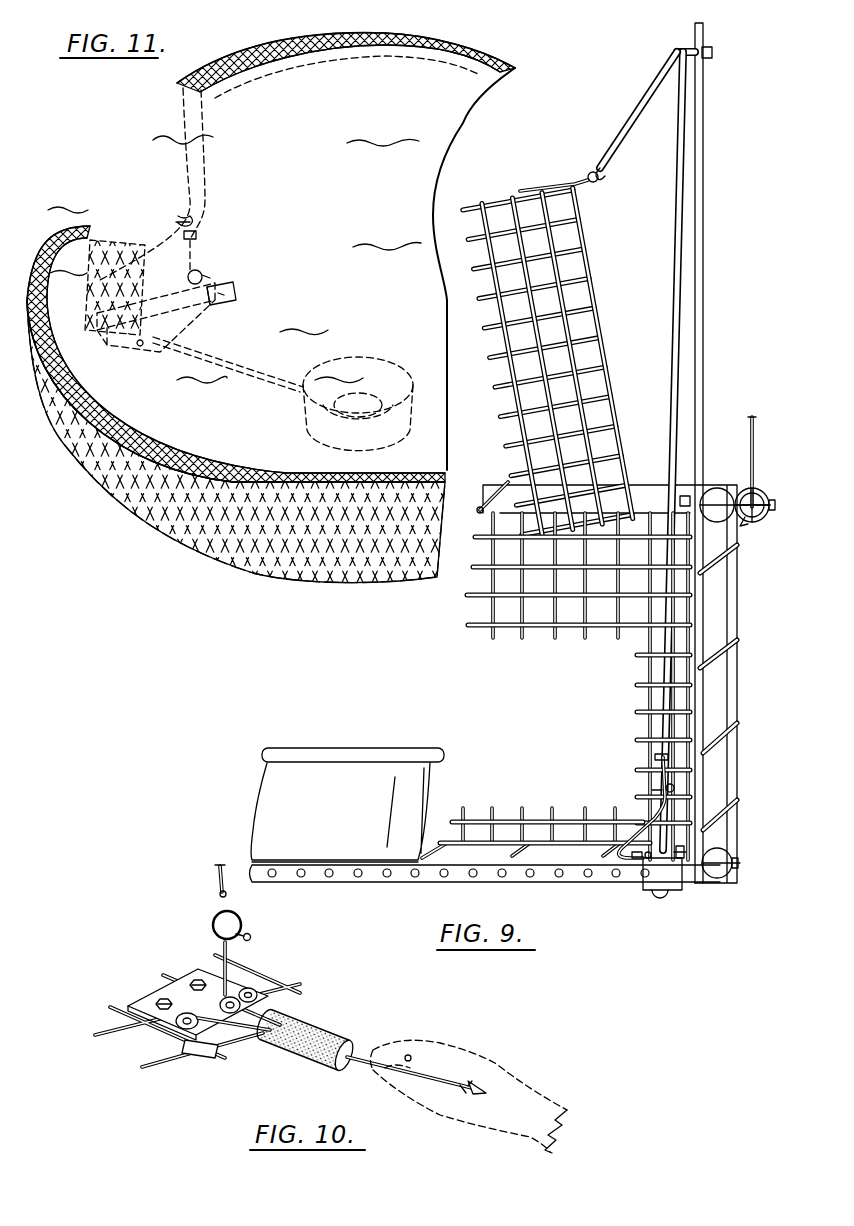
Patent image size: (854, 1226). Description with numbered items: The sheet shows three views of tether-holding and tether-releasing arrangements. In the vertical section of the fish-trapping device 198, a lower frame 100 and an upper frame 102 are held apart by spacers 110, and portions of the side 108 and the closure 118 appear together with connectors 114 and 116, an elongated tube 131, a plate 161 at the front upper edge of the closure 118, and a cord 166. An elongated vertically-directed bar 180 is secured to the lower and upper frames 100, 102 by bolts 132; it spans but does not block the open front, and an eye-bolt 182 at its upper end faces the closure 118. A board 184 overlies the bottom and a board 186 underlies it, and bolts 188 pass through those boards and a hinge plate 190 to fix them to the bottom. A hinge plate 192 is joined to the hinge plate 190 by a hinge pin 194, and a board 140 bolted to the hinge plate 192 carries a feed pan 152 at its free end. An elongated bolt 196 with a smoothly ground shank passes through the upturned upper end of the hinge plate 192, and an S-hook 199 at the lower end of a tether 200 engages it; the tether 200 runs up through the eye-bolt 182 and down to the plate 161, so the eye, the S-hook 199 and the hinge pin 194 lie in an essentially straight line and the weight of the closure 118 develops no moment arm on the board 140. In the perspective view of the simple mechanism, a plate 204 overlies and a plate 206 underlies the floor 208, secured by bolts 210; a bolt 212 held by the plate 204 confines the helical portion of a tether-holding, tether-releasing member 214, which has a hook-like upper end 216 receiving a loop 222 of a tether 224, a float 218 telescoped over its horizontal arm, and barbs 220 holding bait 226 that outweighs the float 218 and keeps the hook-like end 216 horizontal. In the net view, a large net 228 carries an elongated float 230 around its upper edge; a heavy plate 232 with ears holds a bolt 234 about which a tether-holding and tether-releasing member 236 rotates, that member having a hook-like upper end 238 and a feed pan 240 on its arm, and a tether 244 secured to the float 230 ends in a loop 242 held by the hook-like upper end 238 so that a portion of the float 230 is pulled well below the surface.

In FIG. 9, the lower frame 100 is at (498, 483).
In FIG. 9, the upper frame 102 is at (720, 488).
In FIG. 9, the side 108 is at (480, 630).
In FIG. 9, the spacers 110 is at (732, 605).
In FIG. 9, the connector 114 is at (507, 482).
In FIG. 9, the connector 116 is at (735, 660).
In FIG. 9, the closure 118 is at (603, 305).
In FIG. 9, the elongated tube 131 is at (762, 500).
In FIG. 9, the bolts 132 is at (770, 510).
In FIG. 9, the board 140 is at (252, 863).
In FIG. 9, the feed pan 152 is at (330, 752).
In FIG. 9, the plate 161 is at (540, 187).
In FIG. 9, the cord 166 is at (757, 424).
In FIG. 9, the vertically-directed bar 180 is at (704, 206).
In FIG. 9, the eye-bolt 182 is at (712, 52).
In FIG. 9, the board 184 is at (687, 887).
In FIG. 9, the board 186 is at (650, 897).
In FIG. 9, the bolts 188 is at (663, 900).
In FIG. 9, the hinge plate 190 is at (680, 853).
In FIG. 9, the hinge plate 192 is at (643, 823).
In FIG. 9, the hinge pin 194 is at (645, 875).
In FIG. 9, the elongated bolt 196 is at (657, 787).
In FIG. 9, the fish-trapping device 198 is at (583, 135).
In FIG. 9, the S-hook 199 is at (643, 767).
In FIG. 9, the tether 200 is at (673, 200).
In FIG. 10, the plate 204 is at (138, 1005).
In FIG. 10, the plate 206 is at (205, 1053).
In FIG. 10, the floor 208 is at (123, 1052).
In FIG. 10, the bolts 210 is at (163, 1001).
In FIG. 10, the bolt 212 is at (217, 1020).
In FIG. 10, the tether-holding, tether-releasing member 214 is at (240, 967).
In FIG. 10, the hook-like upper end 216 is at (252, 938).
In FIG. 10, the loop 222 is at (210, 918).
In FIG. 10, the tether 224 is at (217, 872).
In FIG. 10, the float 218 is at (314, 1032).
In FIG. 10, the barbs 220 is at (463, 1080).
In FIG. 10, the bait 226 is at (422, 1113).
In FIG. 11, the net 228 is at (223, 553).
In FIG. 11, the float 230 is at (466, 42).
In FIG. 11, the plate 232 is at (236, 290).
In FIG. 11, the bolt 234 is at (227, 327).
In FIG. 11, the tether-holding and tether-releasing member 236 is at (260, 372).
In FIG. 11, the hook-like upper end 238 is at (217, 272).
In FIG. 11, the feed pan 240 is at (380, 360).
In FIG. 11, the loop 242 is at (207, 250).
In FIG. 11, the tether 244 is at (200, 218).